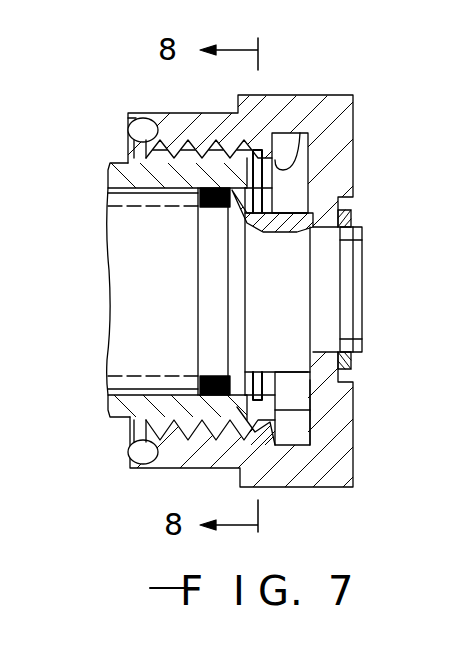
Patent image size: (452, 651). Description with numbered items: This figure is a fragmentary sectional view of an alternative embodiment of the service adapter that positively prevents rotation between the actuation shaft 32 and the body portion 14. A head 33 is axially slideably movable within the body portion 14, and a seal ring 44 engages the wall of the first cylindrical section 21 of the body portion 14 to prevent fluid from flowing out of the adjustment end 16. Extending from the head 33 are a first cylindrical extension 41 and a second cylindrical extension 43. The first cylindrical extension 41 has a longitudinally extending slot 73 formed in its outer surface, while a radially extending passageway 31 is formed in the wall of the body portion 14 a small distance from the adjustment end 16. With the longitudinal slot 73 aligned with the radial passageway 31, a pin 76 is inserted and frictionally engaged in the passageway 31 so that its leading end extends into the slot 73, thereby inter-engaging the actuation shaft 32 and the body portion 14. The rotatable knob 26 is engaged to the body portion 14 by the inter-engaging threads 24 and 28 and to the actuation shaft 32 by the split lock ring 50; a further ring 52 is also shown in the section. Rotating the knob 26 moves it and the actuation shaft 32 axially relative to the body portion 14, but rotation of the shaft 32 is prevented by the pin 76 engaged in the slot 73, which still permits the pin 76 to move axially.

The body portion 14 is at (118, 418).
The adjustment end 16 is at (312, 412).
The first cylindrical section 21 is at (110, 180).
The threads 24 is at (158, 442).
The rotatable knob 26 is at (340, 108).
The threads 28 is at (134, 118).
The radially extending passageway 31 is at (292, 132).
The actuation shaft 32 is at (108, 270).
The head 33 is at (168, 313).
The first cylindrical extension 41 is at (292, 311).
The second cylindrical extension 43 is at (325, 318).
The seal ring 44 is at (200, 118).
The split lock ring 50 is at (345, 216).
The seal ring 52 is at (312, 380).
The longitudinally extending slot 73 is at (297, 205).
The pin 76 is at (254, 147).